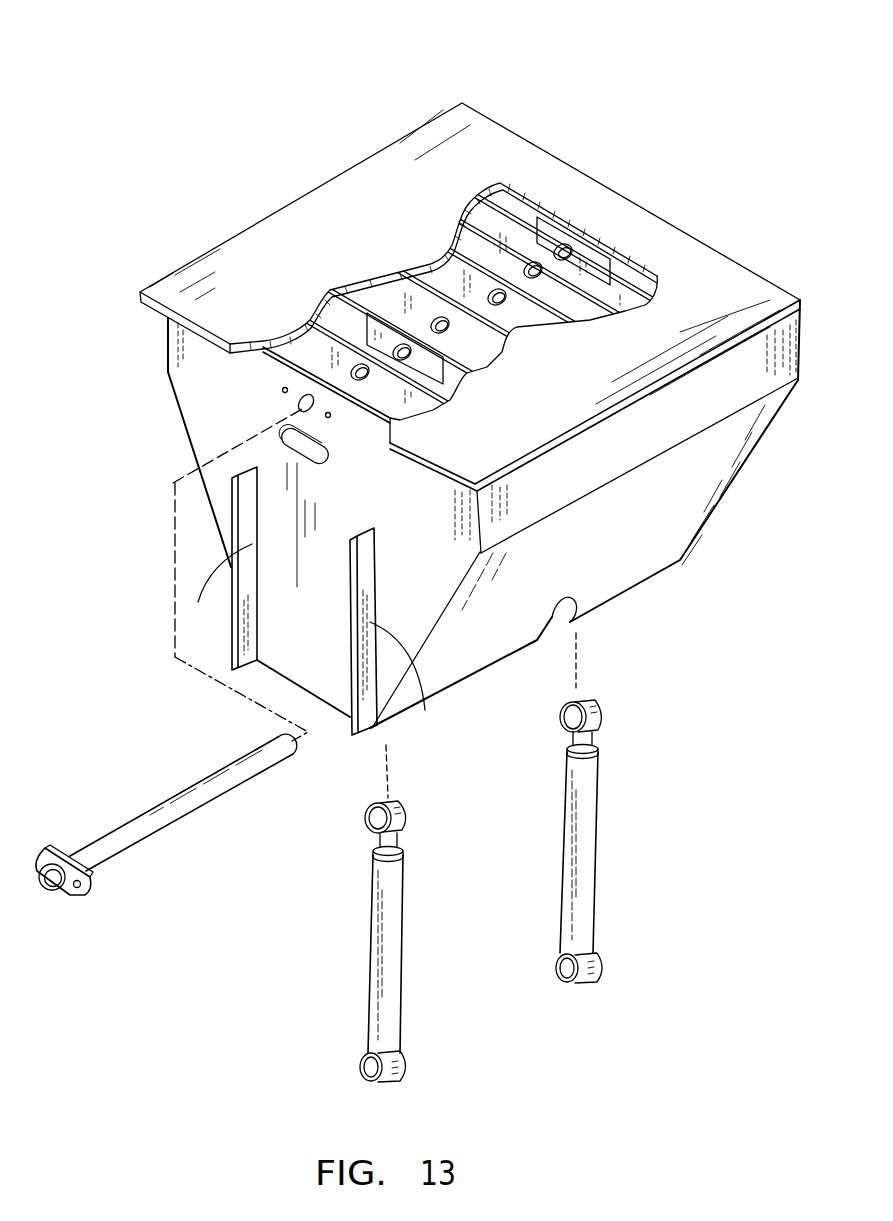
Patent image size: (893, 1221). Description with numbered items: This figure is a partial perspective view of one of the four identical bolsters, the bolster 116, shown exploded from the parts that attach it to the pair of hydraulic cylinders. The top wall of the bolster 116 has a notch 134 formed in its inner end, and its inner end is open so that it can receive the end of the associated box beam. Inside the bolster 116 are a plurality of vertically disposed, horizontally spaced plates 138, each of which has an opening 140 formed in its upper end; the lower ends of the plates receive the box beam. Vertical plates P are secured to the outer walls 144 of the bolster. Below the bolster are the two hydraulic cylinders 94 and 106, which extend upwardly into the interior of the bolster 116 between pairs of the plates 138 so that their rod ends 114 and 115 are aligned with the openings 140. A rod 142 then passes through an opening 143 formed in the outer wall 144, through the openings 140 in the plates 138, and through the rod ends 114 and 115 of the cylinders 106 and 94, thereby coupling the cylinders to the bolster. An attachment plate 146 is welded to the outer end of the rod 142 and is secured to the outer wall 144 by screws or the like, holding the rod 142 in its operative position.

The bolster 116 is at (568, 118).
The notch 134 is at (393, 430).
The plates 138 is at (477, 233).
The opening 140 is at (359, 381).
The opening 143 is at (298, 403).
The outer wall 144 is at (309, 657).
The rod 142 is at (190, 836).
The attachment plate 146 is at (87, 895).
The hydraulic cylinder 106 is at (397, 940).
The rod end 115 is at (400, 803).
The hydraulic cylinder 94 is at (600, 862).
The rod end 114 is at (597, 707).